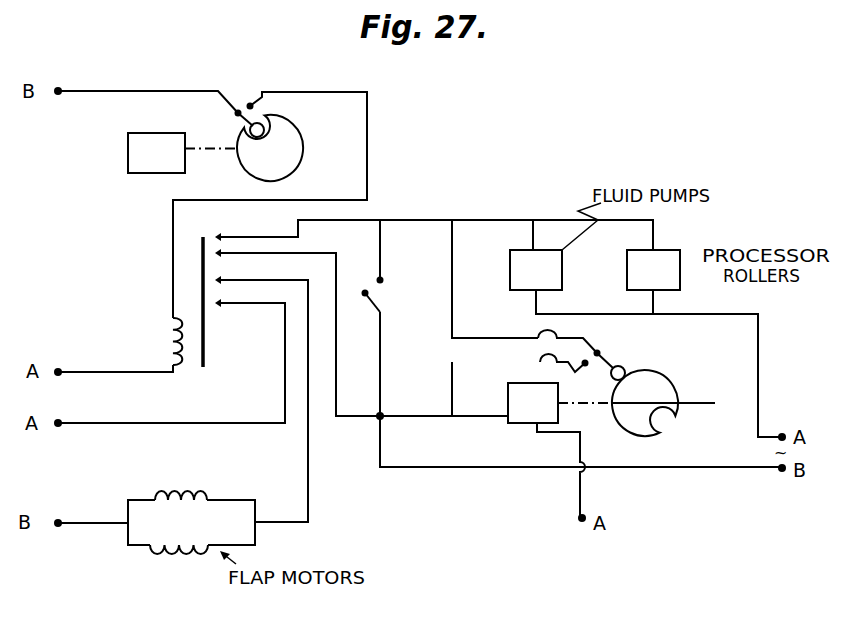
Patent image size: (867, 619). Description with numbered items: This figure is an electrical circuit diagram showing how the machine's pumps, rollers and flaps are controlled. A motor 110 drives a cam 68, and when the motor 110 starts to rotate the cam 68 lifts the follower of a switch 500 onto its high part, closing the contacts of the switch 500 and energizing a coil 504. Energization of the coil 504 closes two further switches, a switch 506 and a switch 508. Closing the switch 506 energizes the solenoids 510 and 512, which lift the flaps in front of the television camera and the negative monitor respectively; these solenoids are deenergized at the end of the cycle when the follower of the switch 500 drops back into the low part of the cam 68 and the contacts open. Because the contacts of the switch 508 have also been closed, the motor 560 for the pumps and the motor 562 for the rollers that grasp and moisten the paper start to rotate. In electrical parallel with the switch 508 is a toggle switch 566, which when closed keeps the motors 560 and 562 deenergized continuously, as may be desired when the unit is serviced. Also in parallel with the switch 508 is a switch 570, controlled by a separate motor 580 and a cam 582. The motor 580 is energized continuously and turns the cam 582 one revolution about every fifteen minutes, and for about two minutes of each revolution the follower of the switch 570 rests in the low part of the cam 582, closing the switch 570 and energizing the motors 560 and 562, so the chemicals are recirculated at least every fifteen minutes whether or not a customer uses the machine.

The switch 500 is at (243, 97).
The motor 110 is at (128, 137).
The cam 68 is at (287, 158).
The switch 508 is at (210, 236).
The coil 504 is at (170, 338).
The switch 506 is at (225, 289).
The toggle switch 566 is at (377, 298).
The motor 560 is at (522, 242).
The motor 562 is at (670, 258).
The switch 570 is at (595, 343).
The cam 582 is at (653, 390).
The motor 580 is at (520, 424).
The solenoid 510 is at (181, 487).
The solenoid 512 is at (163, 558).